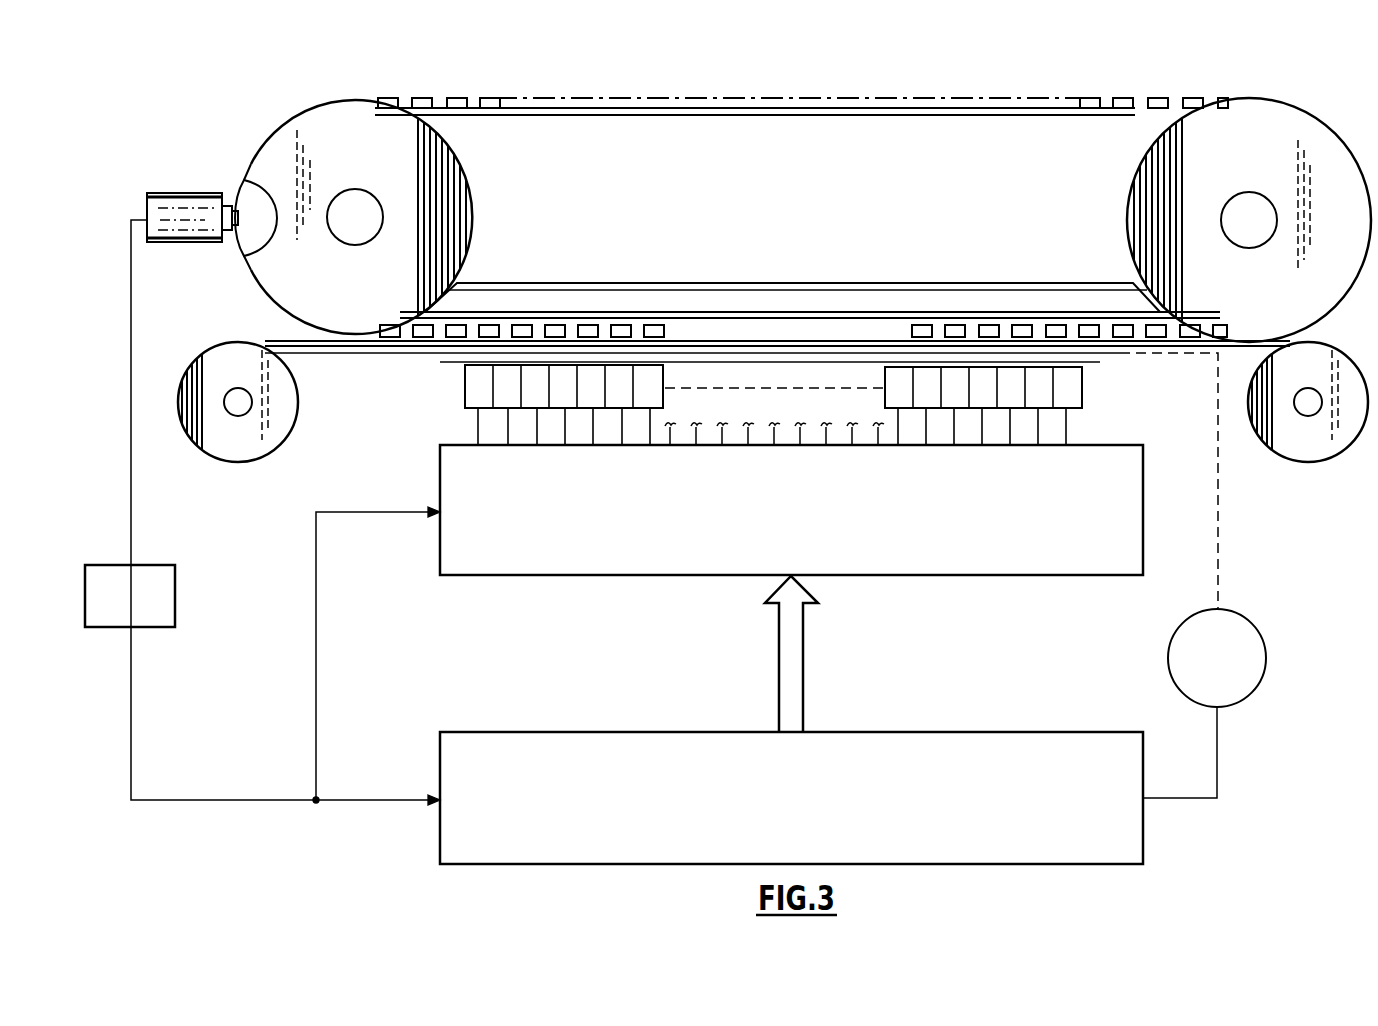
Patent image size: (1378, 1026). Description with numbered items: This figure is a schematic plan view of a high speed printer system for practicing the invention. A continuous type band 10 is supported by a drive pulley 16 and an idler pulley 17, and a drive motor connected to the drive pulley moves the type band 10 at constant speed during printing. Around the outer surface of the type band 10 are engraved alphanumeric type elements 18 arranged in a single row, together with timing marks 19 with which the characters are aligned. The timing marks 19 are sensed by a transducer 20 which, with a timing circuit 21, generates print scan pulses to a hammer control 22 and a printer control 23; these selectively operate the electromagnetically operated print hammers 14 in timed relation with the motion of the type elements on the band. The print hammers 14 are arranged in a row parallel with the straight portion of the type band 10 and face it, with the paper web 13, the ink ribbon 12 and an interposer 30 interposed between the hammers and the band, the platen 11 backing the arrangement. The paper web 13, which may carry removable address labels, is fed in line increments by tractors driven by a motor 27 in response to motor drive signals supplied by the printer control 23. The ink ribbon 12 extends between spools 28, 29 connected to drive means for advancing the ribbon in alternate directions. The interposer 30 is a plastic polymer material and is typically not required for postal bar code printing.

The type band 10 is at (829, 108).
The platen 11 is at (783, 287).
The ink ribbon 12 is at (1286, 343).
The paper web 13 is at (440, 362).
The print hammers 14 is at (465, 398).
The drive pulley 16 is at (1290, 108).
The idler pulley 17 is at (312, 122).
The alphanumeric type elements 18 is at (461, 100).
The timing marks 19 is at (233, 196).
The transducer 20 is at (163, 193).
The timing circuit 21 is at (155, 565).
The hammer control 22 is at (990, 576).
The printer control 23 is at (1012, 732).
The motor 27 is at (1237, 615).
The spool 28 is at (1262, 440).
The spool 29 is at (265, 431).
The interposer 30 is at (1100, 363).